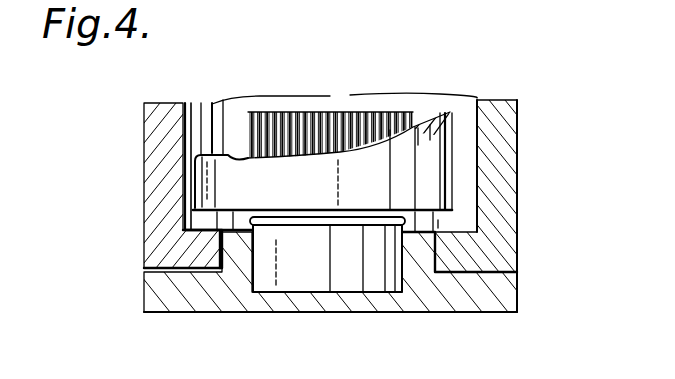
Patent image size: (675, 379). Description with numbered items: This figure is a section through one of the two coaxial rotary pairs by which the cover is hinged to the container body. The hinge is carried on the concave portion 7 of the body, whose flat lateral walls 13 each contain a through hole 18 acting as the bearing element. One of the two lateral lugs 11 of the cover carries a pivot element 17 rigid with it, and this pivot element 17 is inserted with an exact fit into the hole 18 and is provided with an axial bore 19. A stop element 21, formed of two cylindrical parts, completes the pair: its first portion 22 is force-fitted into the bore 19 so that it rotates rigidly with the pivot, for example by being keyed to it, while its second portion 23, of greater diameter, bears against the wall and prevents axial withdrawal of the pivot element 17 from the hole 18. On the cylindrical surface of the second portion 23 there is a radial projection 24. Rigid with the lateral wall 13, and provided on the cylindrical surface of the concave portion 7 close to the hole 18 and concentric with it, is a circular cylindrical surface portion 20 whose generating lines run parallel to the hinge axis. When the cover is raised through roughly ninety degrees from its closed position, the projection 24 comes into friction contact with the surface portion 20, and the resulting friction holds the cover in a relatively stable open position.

The concave portion 7 is at (157, 120).
The lateral lugs 11 is at (188, 308).
The flat lateral walls 13 is at (175, 247).
The pivot element 17 is at (436, 263).
The through hole 18 is at (222, 261).
The axial bore 19 is at (398, 263).
The circular cylindrical surface portion 20 is at (315, 120).
The stop element 21 is at (452, 110).
The first portion 22 is at (345, 280).
The second portion 23 is at (227, 158).
The radial projection 24 is at (205, 175).